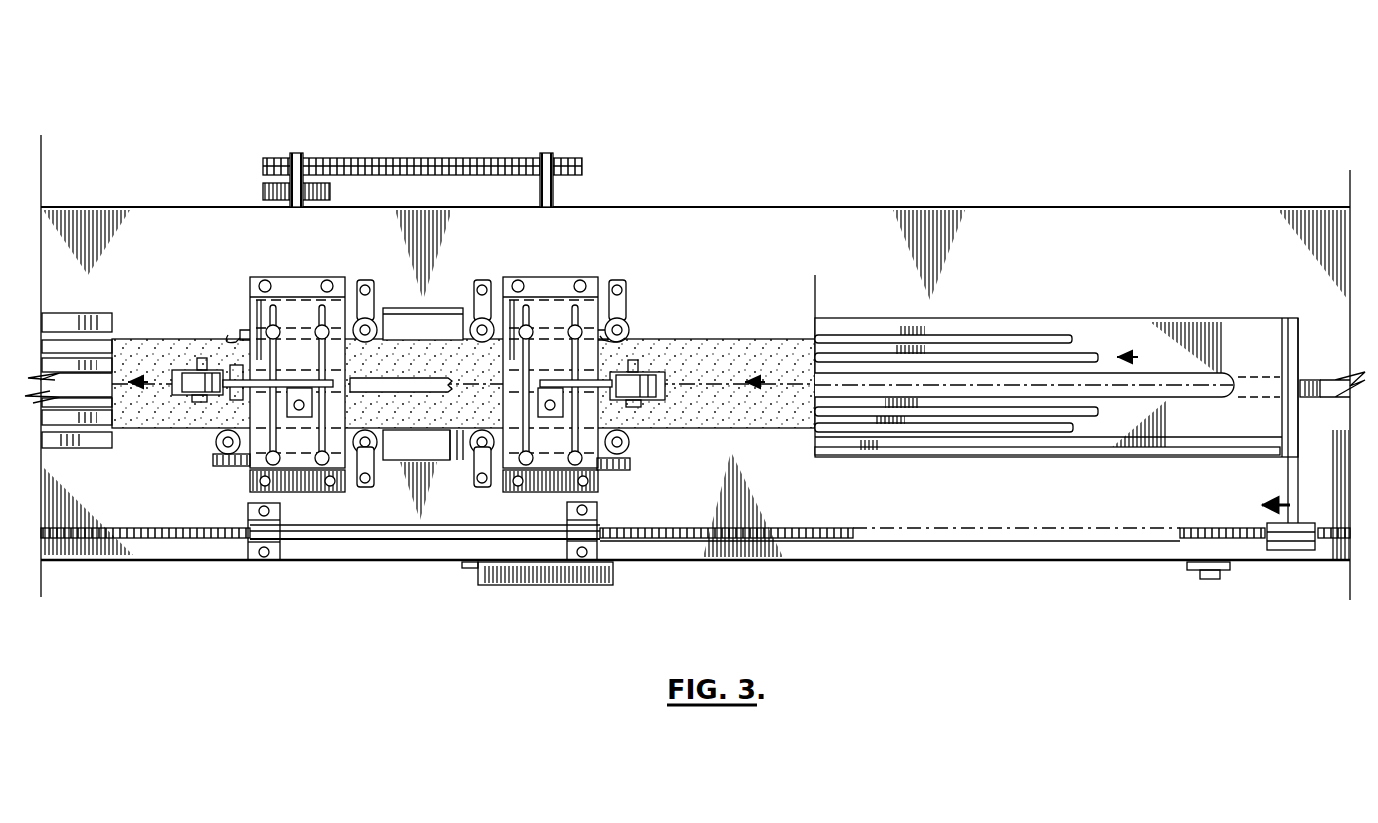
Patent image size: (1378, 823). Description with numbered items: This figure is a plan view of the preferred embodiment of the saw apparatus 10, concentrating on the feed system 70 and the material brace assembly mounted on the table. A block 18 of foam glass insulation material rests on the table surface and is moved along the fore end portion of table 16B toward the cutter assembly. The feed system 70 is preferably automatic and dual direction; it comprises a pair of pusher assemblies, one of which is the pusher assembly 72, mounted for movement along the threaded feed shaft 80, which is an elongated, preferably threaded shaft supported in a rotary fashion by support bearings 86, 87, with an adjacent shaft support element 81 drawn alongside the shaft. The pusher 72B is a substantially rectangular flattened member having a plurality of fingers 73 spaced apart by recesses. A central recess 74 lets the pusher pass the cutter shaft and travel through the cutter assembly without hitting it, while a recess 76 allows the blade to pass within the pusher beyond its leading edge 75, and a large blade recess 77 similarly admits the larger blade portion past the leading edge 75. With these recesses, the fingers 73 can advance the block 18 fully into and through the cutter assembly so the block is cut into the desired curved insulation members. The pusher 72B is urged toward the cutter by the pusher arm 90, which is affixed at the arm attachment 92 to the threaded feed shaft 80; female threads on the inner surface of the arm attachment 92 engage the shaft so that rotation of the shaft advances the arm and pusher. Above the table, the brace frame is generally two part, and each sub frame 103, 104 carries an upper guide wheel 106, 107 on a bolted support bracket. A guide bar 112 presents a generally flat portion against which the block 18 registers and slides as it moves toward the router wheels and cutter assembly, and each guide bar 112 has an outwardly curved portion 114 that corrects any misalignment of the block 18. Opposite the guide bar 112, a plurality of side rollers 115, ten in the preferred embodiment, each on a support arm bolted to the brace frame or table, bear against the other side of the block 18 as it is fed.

The saw apparatus 10 is at (697, 137).
The fore end portion of table 16B is at (1237, 228).
The block 18 is at (721, 350).
The feed system 70 is at (1015, 585).
The pusher assembly 72 is at (75, 313).
The pusher 72B is at (1118, 308).
The fingers 73 is at (828, 340).
The central recess 74 is at (1066, 388).
The leading edge 75 is at (1306, 400).
The recess 76 is at (937, 356).
The large blade recess 77 is at (881, 333).
The threaded feed shaft 80 is at (658, 528).
The rack support 81 is at (795, 550).
The support bearing 86 is at (257, 562).
The support bearing 87 is at (597, 548).
The pusher arm 90 is at (1286, 483).
The arm attachment 92 is at (1298, 523).
The sub frame 103 is at (303, 283).
The sub frame 104 is at (558, 285).
The upper guide wheel 106 is at (637, 386).
The upper guide wheel 107 is at (196, 381).
The guide bar 112 is at (241, 330).
The outwardly curved portion 114 is at (228, 335).
The side rollers 115 is at (403, 491).